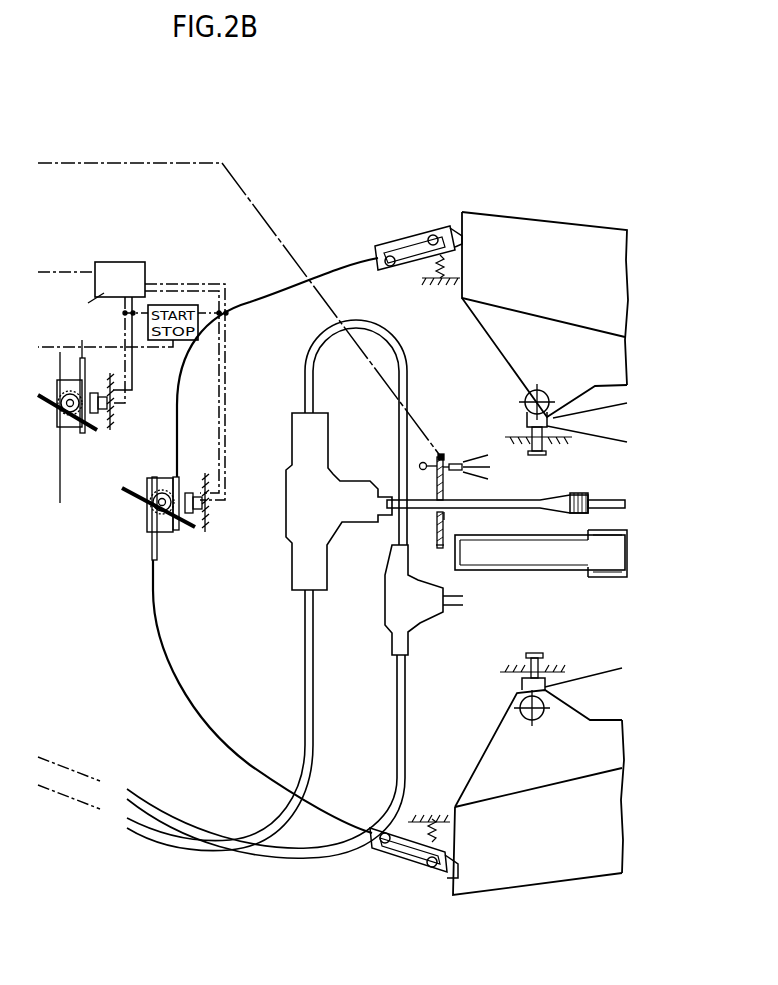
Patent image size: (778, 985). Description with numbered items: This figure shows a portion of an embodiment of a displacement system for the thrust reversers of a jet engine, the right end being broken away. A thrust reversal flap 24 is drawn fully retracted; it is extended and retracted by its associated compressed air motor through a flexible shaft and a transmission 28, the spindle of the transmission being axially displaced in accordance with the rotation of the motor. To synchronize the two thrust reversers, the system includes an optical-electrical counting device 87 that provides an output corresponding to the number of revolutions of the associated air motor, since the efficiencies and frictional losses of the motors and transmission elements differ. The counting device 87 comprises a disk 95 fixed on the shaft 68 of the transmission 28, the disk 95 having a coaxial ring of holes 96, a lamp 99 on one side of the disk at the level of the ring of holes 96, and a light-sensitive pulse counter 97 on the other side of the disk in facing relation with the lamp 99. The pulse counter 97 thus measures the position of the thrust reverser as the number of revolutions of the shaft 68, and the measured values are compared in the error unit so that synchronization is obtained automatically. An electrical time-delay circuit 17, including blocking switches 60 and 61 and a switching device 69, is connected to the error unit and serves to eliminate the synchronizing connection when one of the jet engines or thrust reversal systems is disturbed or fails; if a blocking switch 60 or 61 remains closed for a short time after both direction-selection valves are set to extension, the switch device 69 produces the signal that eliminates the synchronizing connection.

The electrical time-delay circuit 17 is at (56, 274).
The switching device 69 is at (127, 271).
The blocking switch 61 is at (110, 402).
The blocking switch 60 is at (203, 507).
The thrust reversal flap 24 is at (567, 233).
The optical-electrical device 87 is at (463, 450).
The lamp 99 is at (423, 470).
The light-sensitive pulse counter 97 is at (455, 471).
The shaft 68 is at (516, 504).
The disk 95 is at (444, 522).
The ring of holes 96 is at (441, 541).
The transmission 28 is at (540, 605).